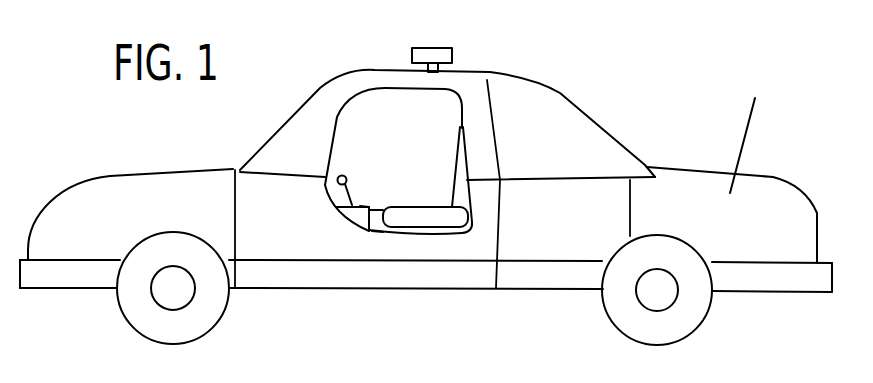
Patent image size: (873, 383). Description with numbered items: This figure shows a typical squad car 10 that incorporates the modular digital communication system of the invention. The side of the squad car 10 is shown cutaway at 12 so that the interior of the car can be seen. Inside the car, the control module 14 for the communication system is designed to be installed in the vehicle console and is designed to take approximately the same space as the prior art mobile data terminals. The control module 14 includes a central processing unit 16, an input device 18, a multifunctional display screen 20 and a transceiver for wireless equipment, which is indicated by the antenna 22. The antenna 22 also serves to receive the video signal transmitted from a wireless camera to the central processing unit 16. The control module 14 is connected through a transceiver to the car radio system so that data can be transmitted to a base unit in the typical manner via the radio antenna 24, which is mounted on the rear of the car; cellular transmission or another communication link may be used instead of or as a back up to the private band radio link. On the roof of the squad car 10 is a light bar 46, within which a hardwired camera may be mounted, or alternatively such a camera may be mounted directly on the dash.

The squad car 10 is at (613, 92).
The cutaway 12 is at (475, 218).
The control module 14 is at (362, 205).
The central processing unit 16 is at (378, 233).
The input device 18 is at (371, 208).
The multifunctional display screen 20 is at (357, 203).
The antenna 22 is at (345, 175).
The radio antenna 24 is at (748, 128).
The light bar 46 is at (442, 48).